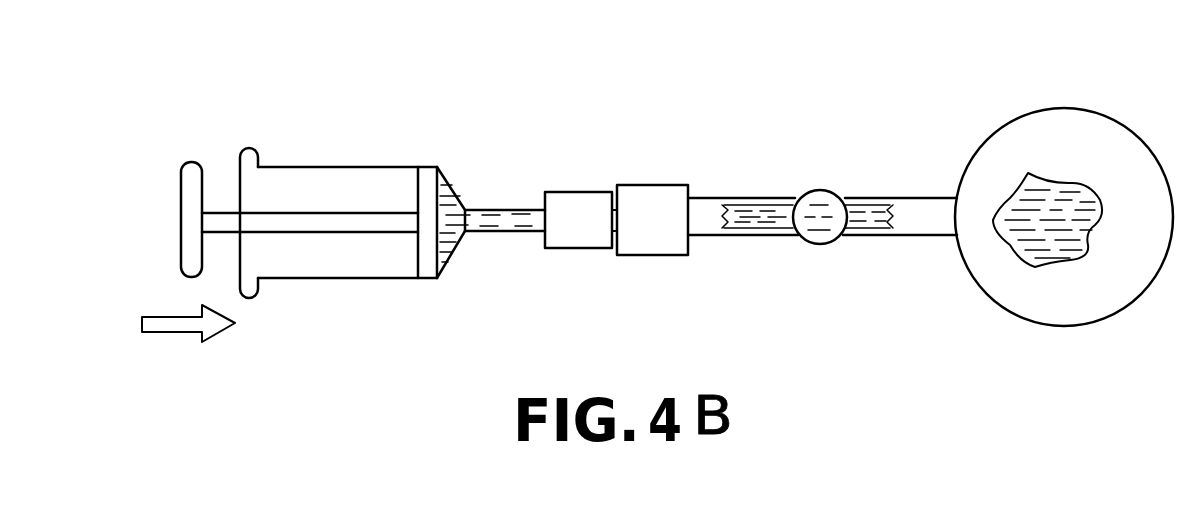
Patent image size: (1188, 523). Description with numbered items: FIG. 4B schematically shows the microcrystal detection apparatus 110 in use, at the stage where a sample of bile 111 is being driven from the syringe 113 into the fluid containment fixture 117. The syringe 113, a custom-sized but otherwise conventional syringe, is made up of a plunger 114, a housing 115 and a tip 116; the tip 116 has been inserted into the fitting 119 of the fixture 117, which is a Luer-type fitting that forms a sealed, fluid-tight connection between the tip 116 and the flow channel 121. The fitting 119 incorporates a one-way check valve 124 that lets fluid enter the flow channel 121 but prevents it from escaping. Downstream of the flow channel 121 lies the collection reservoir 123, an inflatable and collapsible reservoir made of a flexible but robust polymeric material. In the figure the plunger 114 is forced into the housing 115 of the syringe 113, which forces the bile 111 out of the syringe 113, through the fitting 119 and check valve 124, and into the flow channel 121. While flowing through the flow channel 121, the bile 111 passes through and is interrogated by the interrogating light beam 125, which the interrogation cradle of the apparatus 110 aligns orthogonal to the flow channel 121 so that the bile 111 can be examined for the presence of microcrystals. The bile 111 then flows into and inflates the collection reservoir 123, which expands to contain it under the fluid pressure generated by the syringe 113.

The microcrystal detection apparatus 110 is at (858, 52).
The bile 111 is at (492, 218).
The syringe 113 is at (385, 130).
The plunger 114 is at (190, 160).
The housing 115 is at (338, 136).
The tip 116 is at (510, 233).
The fluid containment fixture 117 is at (870, 112).
The fitting 119 is at (588, 237).
The flow channel 121 is at (893, 236).
The collection reservoir 123 is at (1110, 110).
The one-way check valve 124 is at (668, 234).
The interrogating light beam 125 is at (823, 190).